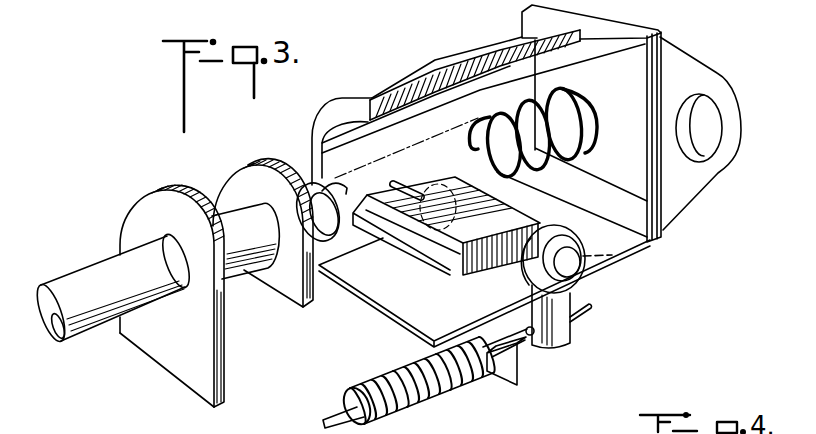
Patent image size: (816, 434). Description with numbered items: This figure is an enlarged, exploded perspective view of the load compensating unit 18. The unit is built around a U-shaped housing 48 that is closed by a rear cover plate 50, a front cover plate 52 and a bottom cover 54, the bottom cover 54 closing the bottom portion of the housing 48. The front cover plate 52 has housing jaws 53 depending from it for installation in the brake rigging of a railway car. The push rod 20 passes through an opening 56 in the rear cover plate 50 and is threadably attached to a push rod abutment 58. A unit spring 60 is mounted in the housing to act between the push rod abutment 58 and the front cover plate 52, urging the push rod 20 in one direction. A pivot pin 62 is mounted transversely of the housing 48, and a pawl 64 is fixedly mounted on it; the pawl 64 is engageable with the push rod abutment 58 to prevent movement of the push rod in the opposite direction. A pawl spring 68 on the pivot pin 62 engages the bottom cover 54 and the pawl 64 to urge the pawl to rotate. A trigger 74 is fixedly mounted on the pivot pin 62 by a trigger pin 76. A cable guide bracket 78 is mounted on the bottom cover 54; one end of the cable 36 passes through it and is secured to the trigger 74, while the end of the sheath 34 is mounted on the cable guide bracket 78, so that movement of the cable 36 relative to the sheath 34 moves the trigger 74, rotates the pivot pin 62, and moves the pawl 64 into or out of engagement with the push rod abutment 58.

The load compensating unit 18 is at (162, 126).
The push rod 20 is at (75, 273).
The sheath 34 is at (392, 376).
The cable 36 is at (529, 335).
The U-shaped housing 48 is at (434, 66).
The rear cover plate 50 is at (168, 360).
The front cover plate 52 is at (623, 43).
The housing jaws 53 is at (691, 185).
The bottom cover 54 is at (640, 243).
The opening 56 is at (203, 294).
The push rod abutment 58 is at (268, 168).
The unit spring 60 is at (570, 160).
The pivot pin 62 is at (572, 268).
The pawl 64 is at (483, 273).
The pawl spring 68 is at (417, 190).
The trigger 74 is at (565, 342).
The trigger pin 76 is at (620, 258).
The cable guide bracket 78 is at (505, 373).